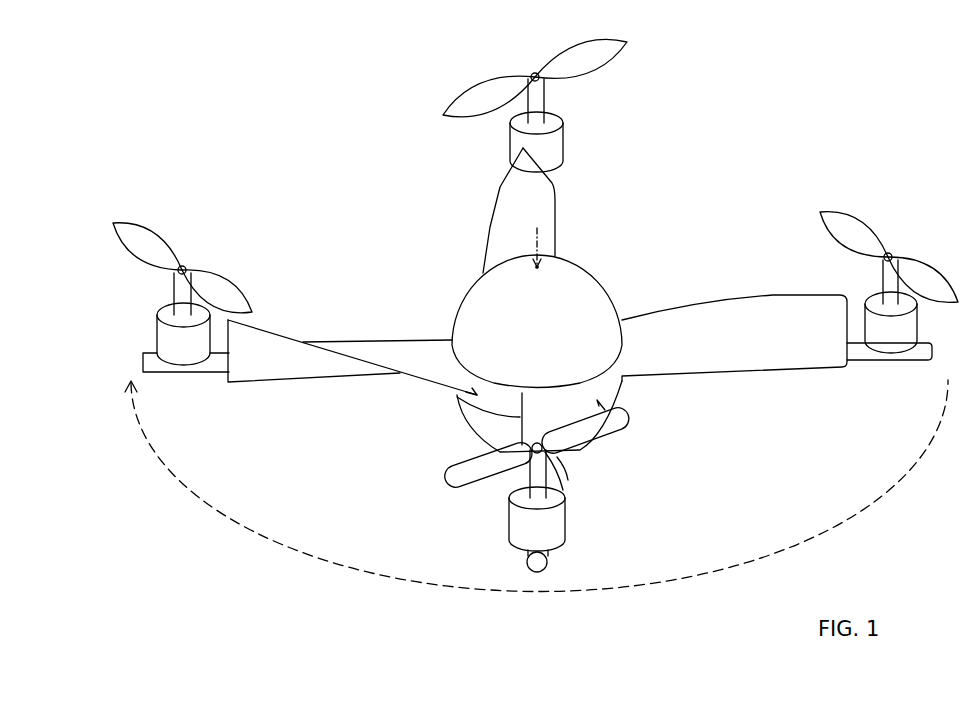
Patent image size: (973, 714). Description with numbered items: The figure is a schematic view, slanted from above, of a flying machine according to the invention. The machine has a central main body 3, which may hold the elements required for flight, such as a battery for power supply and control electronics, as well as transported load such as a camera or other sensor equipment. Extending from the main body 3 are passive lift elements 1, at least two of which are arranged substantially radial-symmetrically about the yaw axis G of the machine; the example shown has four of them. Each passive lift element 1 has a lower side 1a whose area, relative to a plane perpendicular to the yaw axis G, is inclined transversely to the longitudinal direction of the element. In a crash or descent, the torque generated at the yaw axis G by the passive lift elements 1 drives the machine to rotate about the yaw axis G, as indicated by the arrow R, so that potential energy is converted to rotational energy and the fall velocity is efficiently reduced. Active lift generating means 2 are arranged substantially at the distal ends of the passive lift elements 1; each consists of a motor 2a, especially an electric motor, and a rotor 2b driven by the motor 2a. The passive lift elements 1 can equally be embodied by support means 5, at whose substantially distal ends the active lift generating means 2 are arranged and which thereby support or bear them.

The passive lift element 1 is at (553, 210).
The lower side 1a is at (273, 373).
The active lift generating means 2 is at (421, 53).
The motor 2a is at (560, 157).
The rotor 2b is at (620, 52).
The main body 3 is at (590, 287).
The support means 5 is at (923, 357).
The yaw axis G is at (542, 245).
The arrow indicating rotation R is at (536, 486).